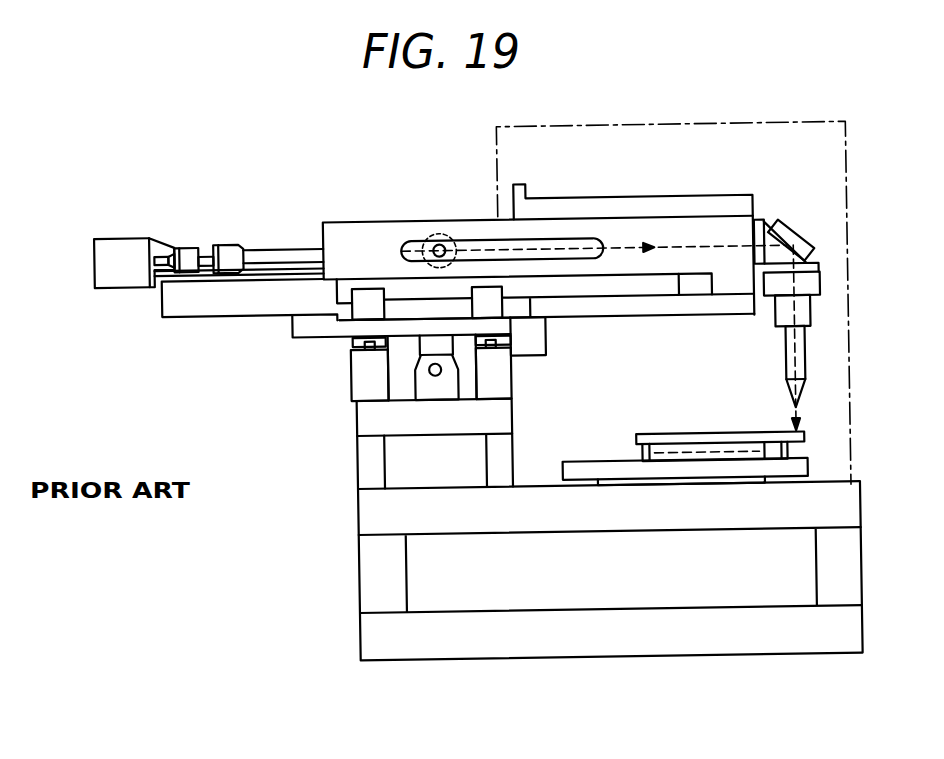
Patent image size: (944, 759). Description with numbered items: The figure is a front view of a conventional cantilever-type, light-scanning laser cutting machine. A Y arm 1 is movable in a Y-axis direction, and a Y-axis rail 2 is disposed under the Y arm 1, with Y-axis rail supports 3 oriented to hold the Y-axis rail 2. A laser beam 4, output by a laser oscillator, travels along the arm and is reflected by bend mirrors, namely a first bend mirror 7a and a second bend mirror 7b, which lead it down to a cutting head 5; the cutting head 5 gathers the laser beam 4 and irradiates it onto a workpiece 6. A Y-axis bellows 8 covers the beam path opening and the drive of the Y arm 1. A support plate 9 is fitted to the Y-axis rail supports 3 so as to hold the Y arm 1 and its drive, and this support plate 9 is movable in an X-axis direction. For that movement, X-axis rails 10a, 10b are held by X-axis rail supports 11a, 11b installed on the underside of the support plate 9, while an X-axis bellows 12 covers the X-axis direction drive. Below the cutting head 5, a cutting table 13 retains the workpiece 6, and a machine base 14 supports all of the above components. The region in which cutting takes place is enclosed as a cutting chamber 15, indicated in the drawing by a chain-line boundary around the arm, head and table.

The Y arm 1 is at (382, 230).
The Y-axis rail 2 is at (684, 290).
The Y-axis rail supports 3 is at (372, 298).
The laser beam 4 is at (700, 250).
The cutting head 5 is at (788, 371).
The workpiece 6 is at (696, 438).
The first bend mirror 7a is at (466, 241).
The second bend mirror 7b is at (801, 228).
The Y-axis bellows 8 is at (641, 202).
The support plate 9 is at (295, 316).
The X-axis rail 10a is at (370, 351).
The X-axis rail 10b is at (493, 351).
The X-axis rail support 11a is at (354, 344).
The X-axis rail support 11b is at (500, 342).
The X-axis bellows 12 is at (548, 344).
The cutting table 13 is at (610, 465).
The machine base 14 is at (375, 576).
The cutting chamber 15 is at (599, 139).